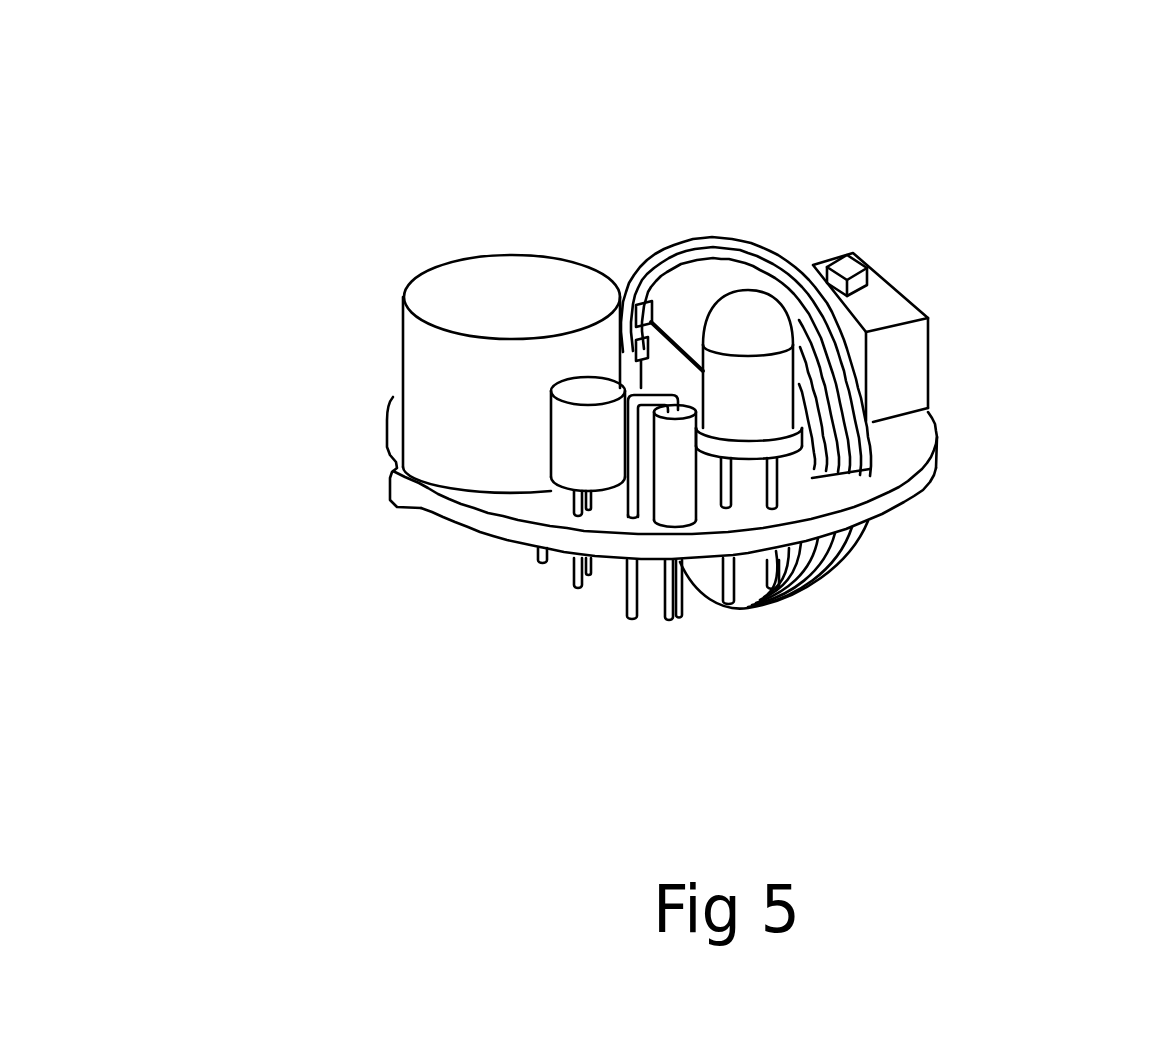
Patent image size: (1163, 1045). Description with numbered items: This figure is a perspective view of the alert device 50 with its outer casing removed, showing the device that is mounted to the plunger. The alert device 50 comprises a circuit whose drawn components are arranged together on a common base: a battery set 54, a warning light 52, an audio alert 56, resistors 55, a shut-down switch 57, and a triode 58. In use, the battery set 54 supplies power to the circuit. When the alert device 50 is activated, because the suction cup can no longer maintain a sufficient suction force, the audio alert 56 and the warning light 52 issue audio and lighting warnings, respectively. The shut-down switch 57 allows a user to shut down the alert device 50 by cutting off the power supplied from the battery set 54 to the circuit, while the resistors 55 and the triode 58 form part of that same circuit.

The alert device 50 is at (507, 135).
The warning light 52 is at (763, 400).
The battery set 54 is at (745, 262).
The resistors 55 is at (685, 478).
The audio alert 56 is at (518, 302).
The shut-down switch 57 is at (890, 308).
The triode 58 is at (575, 438).